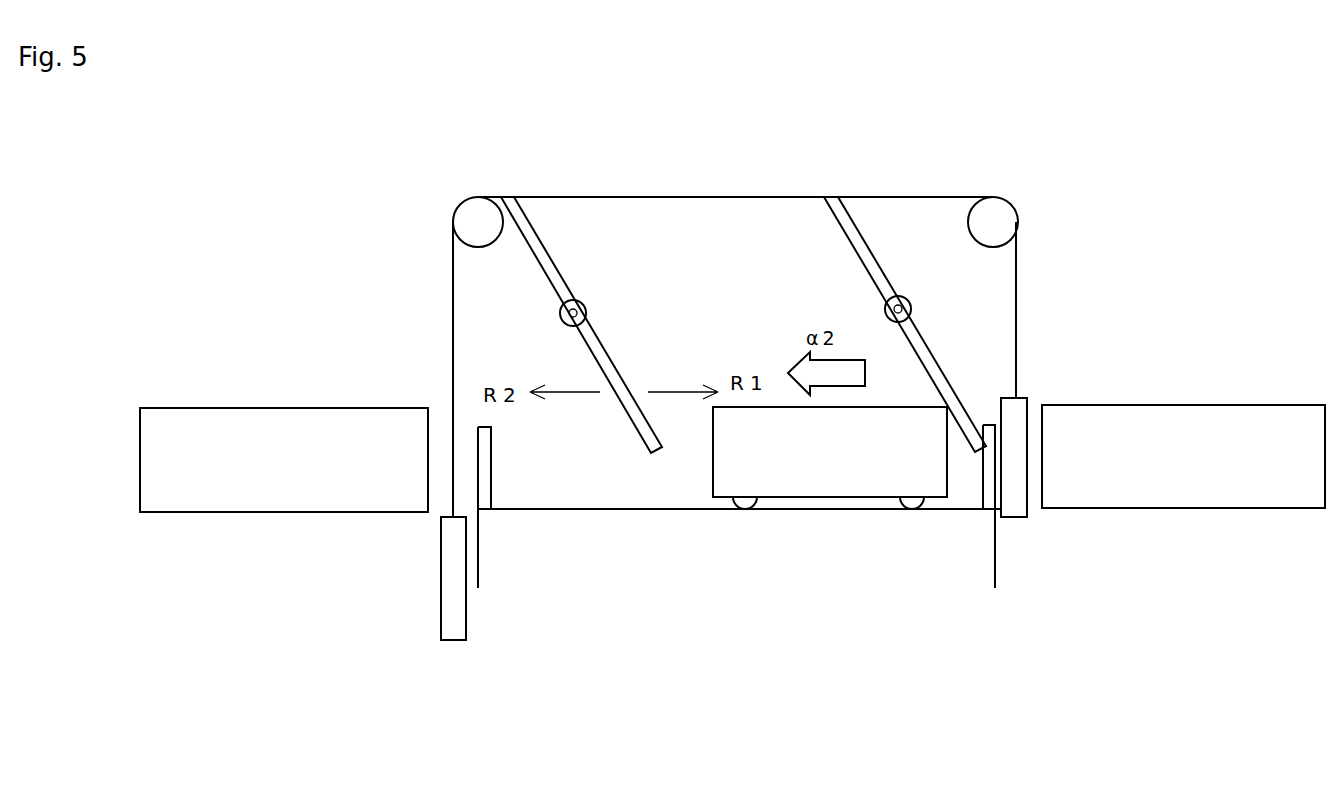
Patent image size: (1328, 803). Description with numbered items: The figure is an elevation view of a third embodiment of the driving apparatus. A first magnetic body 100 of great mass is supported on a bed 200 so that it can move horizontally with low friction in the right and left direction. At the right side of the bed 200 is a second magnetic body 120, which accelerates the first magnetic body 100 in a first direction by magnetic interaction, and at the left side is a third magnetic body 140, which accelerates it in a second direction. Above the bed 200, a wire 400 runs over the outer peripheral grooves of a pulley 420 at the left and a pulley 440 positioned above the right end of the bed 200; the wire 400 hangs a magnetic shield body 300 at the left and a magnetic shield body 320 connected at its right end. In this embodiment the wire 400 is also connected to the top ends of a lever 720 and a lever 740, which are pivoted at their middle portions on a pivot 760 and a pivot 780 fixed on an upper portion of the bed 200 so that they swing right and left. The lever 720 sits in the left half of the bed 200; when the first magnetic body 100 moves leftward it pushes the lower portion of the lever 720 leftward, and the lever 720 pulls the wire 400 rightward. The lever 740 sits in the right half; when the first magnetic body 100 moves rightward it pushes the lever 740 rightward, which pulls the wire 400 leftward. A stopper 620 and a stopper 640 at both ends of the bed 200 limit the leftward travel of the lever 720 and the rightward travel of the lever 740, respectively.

The first magnetic body 100 is at (790, 487).
The second magnetic body 120 is at (1262, 410).
The third magnetic body 140 is at (263, 415).
The bed 200 is at (683, 508).
The magnetic shield body 300 is at (455, 642).
The magnetic shield body 320 is at (1012, 512).
The wire 400 is at (720, 196).
The pulley 420 is at (470, 216).
The pulley 440 is at (993, 217).
The stopper 620 is at (491, 455).
The stopper 640 is at (983, 483).
The lever 720 is at (545, 253).
The lever 740 is at (853, 233).
The pivot 760 is at (562, 325).
The pivot 780 is at (912, 315).